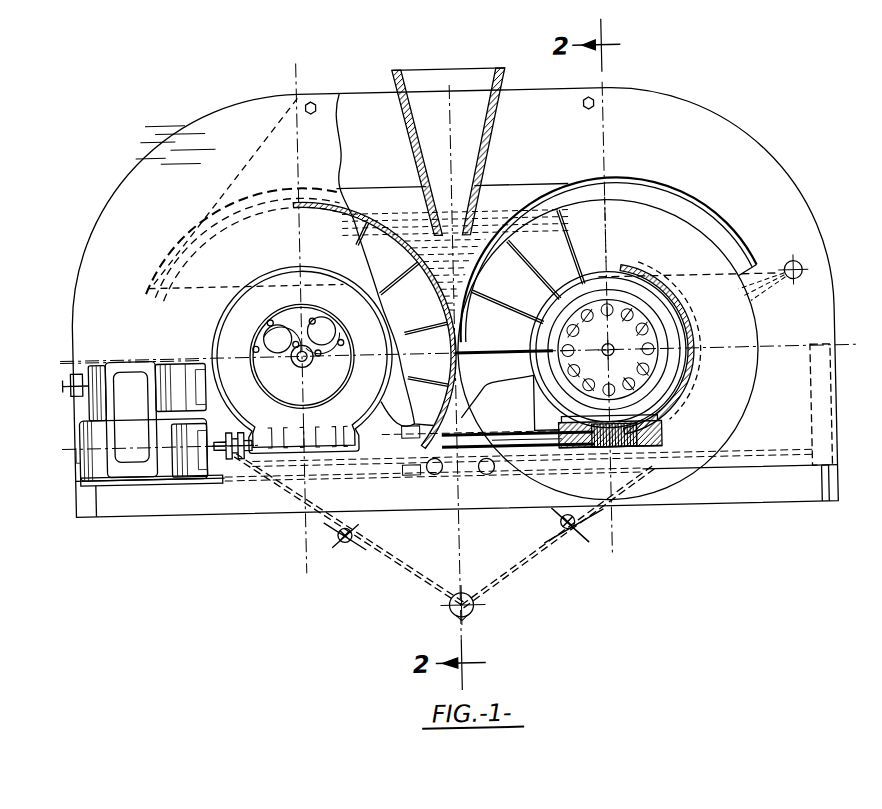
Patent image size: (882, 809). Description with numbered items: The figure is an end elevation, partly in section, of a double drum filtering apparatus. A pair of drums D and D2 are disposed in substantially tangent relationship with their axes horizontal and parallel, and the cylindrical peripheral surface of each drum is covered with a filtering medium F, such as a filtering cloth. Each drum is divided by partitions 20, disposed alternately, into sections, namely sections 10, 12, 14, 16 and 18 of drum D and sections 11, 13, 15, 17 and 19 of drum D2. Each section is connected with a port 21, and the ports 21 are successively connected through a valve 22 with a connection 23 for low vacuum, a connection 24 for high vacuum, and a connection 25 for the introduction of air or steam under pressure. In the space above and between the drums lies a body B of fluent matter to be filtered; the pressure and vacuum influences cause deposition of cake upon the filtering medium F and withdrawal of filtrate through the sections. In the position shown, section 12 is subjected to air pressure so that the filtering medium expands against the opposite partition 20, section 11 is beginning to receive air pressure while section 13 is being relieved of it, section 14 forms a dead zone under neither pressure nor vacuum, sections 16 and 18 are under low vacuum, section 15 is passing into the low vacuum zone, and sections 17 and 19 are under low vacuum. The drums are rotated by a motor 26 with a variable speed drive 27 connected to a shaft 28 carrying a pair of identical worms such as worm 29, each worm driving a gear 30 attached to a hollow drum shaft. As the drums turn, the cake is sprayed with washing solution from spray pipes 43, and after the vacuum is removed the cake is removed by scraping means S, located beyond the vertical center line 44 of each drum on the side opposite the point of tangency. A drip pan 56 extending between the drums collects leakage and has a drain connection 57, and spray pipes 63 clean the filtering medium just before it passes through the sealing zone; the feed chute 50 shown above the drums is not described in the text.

The section of drum D 10 is at (409, 404).
The section of drum D' 11 is at (507, 390).
The section of drum D 12 is at (427, 370).
The section of drum D' 13 is at (508, 311).
The section of drum D 14 is at (423, 309).
The section of drum D' 15 is at (534, 270).
The section of drum D 16 is at (395, 268).
The section of drum D' 17 is at (559, 247).
The section of drum D 18 is at (354, 226).
The section of drum D' 19 is at (594, 229).
The partitions 20 is at (375, 265).
The port 21 is at (636, 320).
The valve 22 is at (272, 374).
The connection for low vacuum 23 is at (322, 314).
The connection for high vacuum 24 is at (266, 328).
The connection for air and/or steam 25 is at (312, 362).
The motor 26 is at (92, 462).
The variable speed drive 27 is at (113, 355).
The shaft 28 is at (640, 440).
The worm 29 is at (612, 450).
The gear 30 is at (690, 364).
The spray pipes 43 is at (804, 273).
The vertical center line 44 is at (605, 130).
The feed hopper 50 is at (498, 120).
The drip pan 56 is at (530, 545).
The drain connection 57 is at (462, 612).
The spray pipes 63 is at (532, 456).
The body of fluent matter B is at (495, 215).
The drum D is at (152, 318).
The drum D' D2 is at (762, 333).
The filtering medium F is at (352, 208).
The scraping means S is at (300, 520).